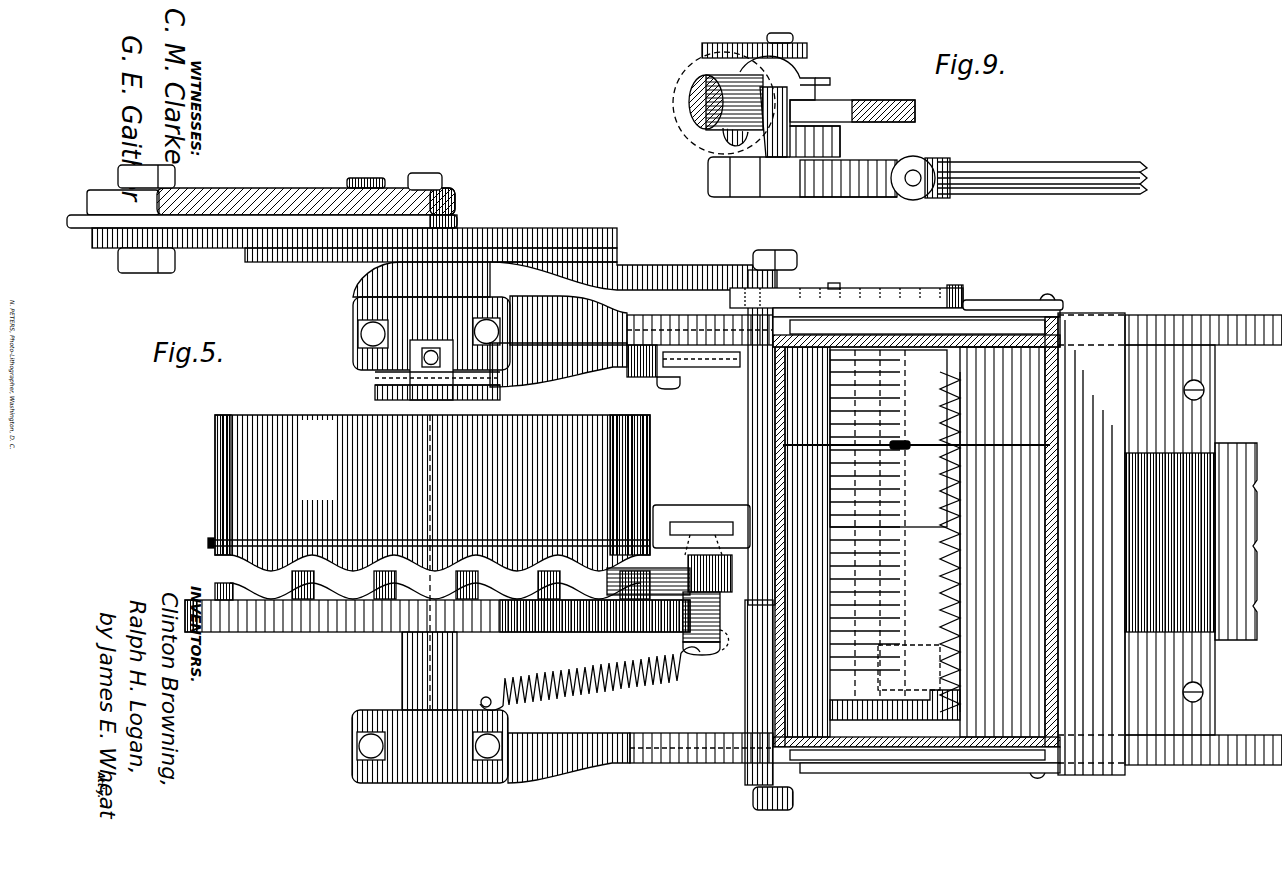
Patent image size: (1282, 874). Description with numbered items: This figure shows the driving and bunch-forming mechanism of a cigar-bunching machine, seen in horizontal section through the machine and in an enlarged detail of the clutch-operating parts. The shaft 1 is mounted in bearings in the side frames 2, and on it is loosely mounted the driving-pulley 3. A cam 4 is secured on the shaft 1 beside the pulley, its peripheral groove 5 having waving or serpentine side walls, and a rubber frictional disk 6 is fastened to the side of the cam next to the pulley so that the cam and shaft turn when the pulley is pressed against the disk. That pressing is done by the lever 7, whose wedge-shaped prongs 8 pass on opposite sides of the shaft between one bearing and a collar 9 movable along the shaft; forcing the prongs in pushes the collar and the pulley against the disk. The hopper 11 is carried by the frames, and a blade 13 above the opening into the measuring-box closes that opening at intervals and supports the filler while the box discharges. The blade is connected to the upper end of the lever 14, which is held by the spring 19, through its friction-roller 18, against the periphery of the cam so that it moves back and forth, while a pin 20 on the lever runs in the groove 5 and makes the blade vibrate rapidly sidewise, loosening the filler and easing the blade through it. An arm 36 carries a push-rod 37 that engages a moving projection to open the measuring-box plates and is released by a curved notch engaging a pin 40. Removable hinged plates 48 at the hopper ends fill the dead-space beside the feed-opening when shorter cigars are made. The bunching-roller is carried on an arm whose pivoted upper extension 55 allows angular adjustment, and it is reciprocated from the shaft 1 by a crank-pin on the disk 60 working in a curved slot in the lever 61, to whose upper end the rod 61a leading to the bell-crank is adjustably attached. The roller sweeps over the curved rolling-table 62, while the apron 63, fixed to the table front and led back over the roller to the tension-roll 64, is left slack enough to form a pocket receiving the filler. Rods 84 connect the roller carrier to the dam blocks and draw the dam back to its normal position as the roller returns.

In FIG. 9, the shaft 1 is at (688, 104).
In FIG. 5, the shaft 1 is at (402, 671).
In FIG. 9, the side frames 2 is at (878, 103).
In FIG. 5, the side frames 2 is at (697, 323).
In FIG. 5, the driving-pulley 3 is at (432, 493).
In FIG. 5, the cam 4 is at (344, 634).
In FIG. 5, the peripheral groove 5 is at (432, 585).
In FIG. 5, the frictional disk 6 is at (208, 543).
In FIG. 9, the lever 7 is at (843, 162).
In FIG. 5, the lever 7 is at (597, 381).
In FIG. 9, the wedge-shaped prongs 8 is at (722, 135).
In FIG. 5, the wedge-shaped prongs 8 is at (375, 378).
In FIG. 9, the collar 9 is at (690, 76).
In FIG. 5, the collar 9 is at (375, 398).
In FIG. 5, the hopper 11 is at (990, 333).
In FIG. 5, the blade 13 is at (895, 535).
In FIG. 5, the lever 14 is at (710, 573).
In FIG. 5, the friction-roller 18 is at (708, 635).
In FIG. 5, the spring 19 is at (610, 692).
In FIG. 5, the pin 20 is at (648, 579).
In FIG. 5, the arm 36 is at (958, 300).
In FIG. 5, the push-rod 37 is at (889, 298).
In FIG. 5, the pin 40 is at (832, 292).
In FIG. 5, the removable plates 48 is at (1001, 448).
In FIG. 5, the extension 55 is at (793, 782).
In FIG. 5, the disk 60 is at (307, 250).
In FIG. 5, the lever 61 is at (252, 190).
In FIG. 5, the rod 61a is at (690, 277).
In FIG. 5, the rolling-table 62 is at (1203, 540).
In FIG. 5, the apron 63 is at (1191, 541).
In FIG. 5, the tension-roll 64 is at (760, 708).
In FIG. 5, the rods 84 is at (1035, 300).